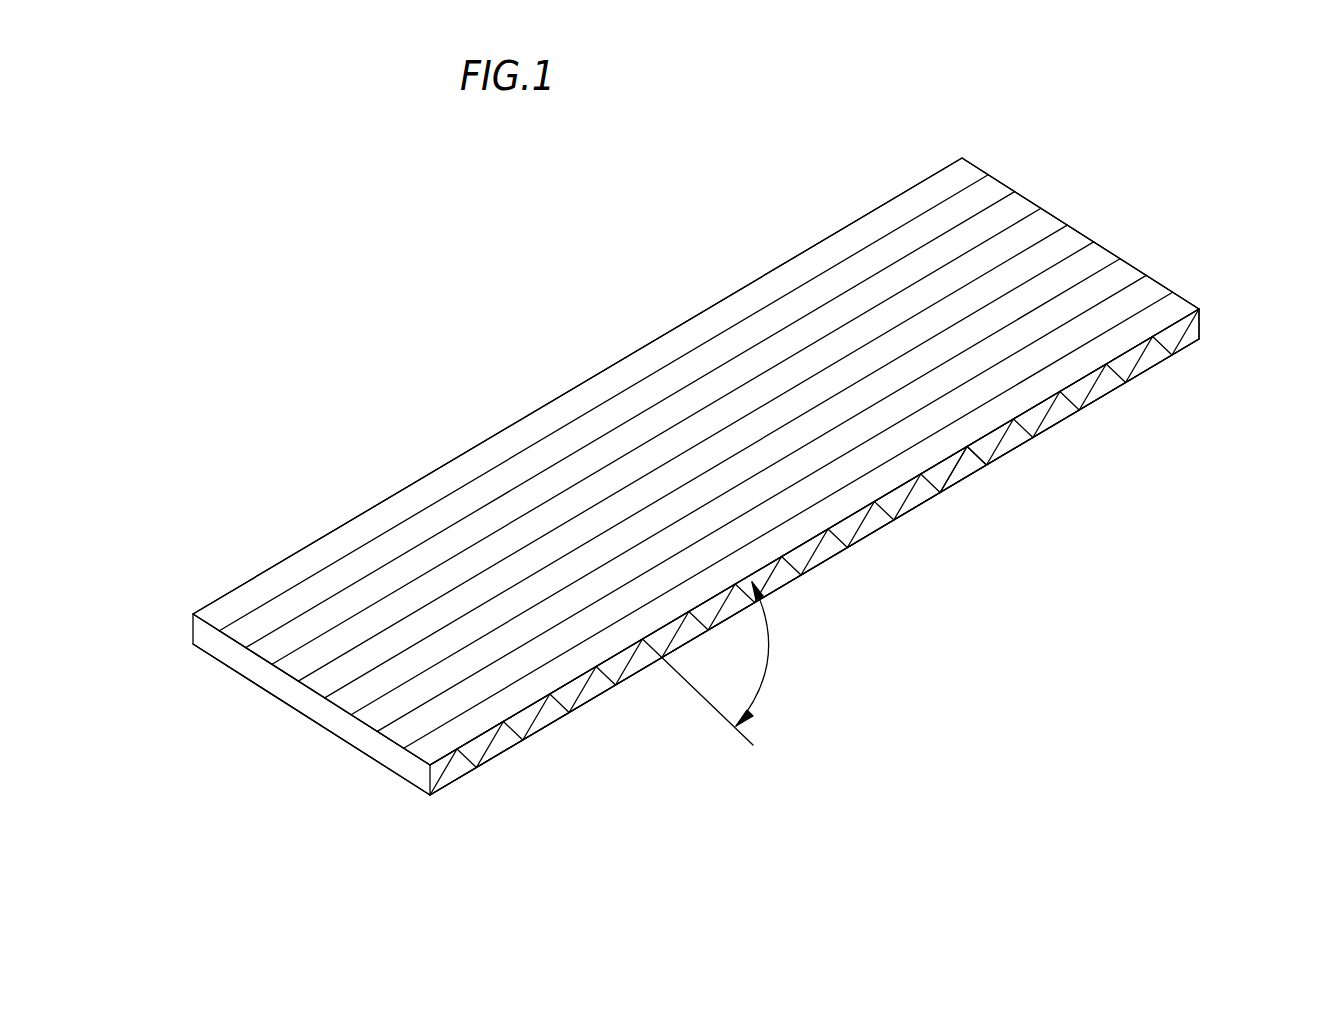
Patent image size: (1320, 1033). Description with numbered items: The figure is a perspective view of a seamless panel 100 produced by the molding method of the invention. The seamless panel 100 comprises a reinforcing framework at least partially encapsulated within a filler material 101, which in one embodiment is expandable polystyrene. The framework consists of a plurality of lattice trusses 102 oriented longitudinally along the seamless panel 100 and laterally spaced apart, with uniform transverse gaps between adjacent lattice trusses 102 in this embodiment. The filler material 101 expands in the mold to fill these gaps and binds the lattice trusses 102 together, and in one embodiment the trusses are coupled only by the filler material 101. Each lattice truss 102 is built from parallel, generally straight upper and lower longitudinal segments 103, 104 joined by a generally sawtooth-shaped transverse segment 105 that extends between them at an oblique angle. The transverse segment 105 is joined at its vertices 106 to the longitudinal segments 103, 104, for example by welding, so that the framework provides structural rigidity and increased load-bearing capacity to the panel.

The seamless panel 100 is at (577, 325).
The filler material 101 is at (1063, 245).
The lattice truss 102 is at (488, 504).
The upper longitudinal segment 103 is at (1172, 327).
The lower longitudinal segment 104 is at (1158, 370).
The transverse segment 105 is at (1145, 372).
The vertex 106 is at (967, 448).